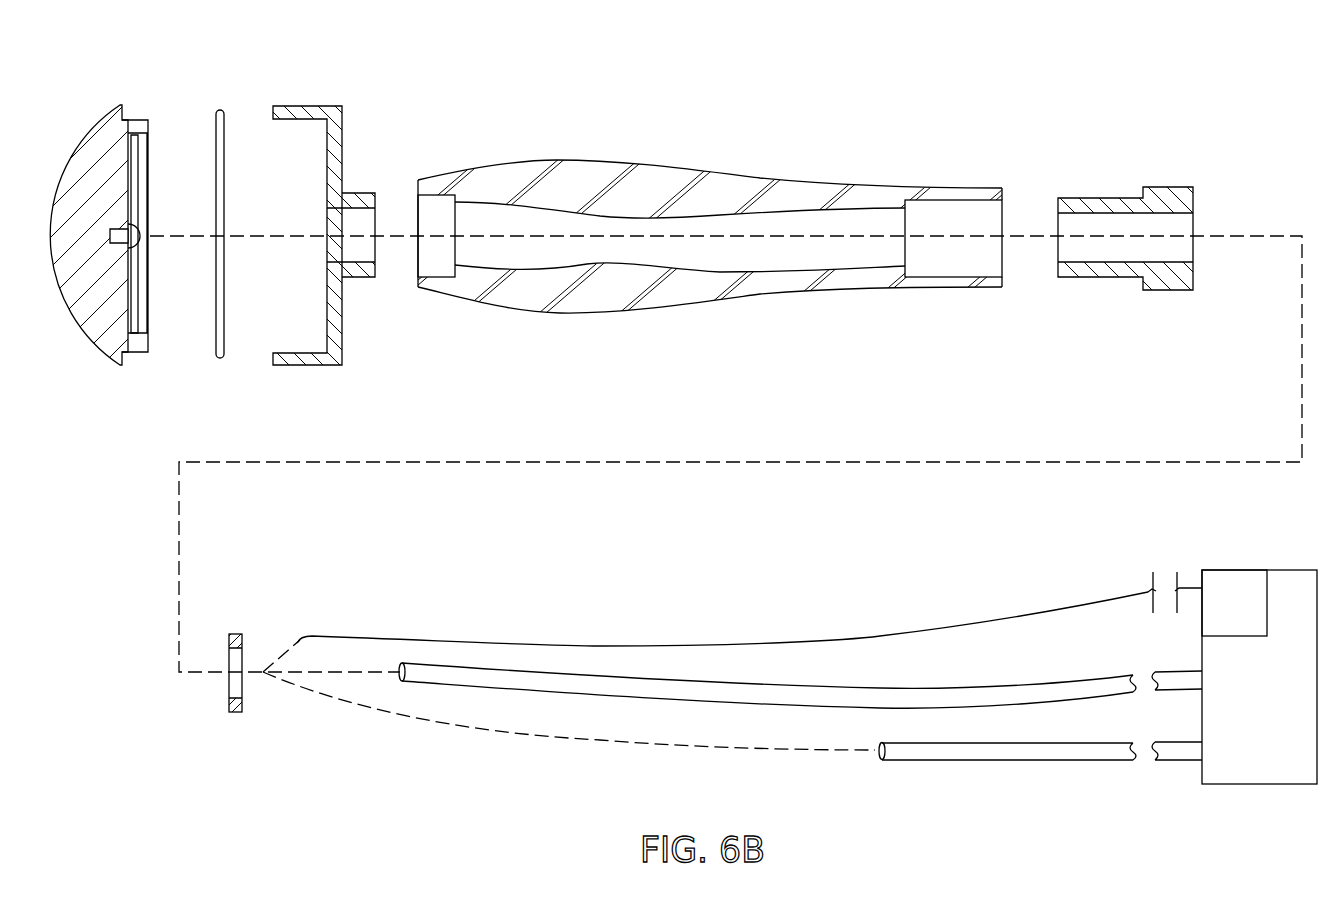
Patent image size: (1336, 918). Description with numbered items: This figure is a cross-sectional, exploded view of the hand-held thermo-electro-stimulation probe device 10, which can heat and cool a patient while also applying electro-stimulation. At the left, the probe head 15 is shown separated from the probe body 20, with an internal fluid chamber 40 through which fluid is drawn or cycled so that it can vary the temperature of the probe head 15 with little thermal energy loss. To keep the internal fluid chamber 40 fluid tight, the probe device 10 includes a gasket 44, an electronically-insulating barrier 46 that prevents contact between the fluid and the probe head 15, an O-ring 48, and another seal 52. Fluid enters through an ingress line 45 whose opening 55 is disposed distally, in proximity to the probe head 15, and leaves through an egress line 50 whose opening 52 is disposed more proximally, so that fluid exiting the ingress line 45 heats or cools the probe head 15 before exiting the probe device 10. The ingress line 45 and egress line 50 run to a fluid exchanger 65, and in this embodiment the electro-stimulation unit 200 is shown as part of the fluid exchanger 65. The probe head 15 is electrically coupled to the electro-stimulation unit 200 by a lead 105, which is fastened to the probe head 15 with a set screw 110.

The probe device 10 is at (730, 88).
The probe head 15 is at (91, 122).
The probe body 20 is at (648, 176).
The internal fluid chamber 40 is at (295, 167).
The gasket 44 is at (220, 108).
The ingress line 45 is at (903, 690).
The barrier 46 is at (136, 286).
The O-ring 48 is at (233, 712).
The egress line 50 is at (1001, 760).
The seal 52 is at (1165, 187).
The opening 55 is at (399, 670).
The fluid exchanger 65 is at (1272, 758).
The lead 105 is at (737, 640).
The set screw 110 is at (110, 236).
The electro-stimulation unit 200 is at (1256, 620).